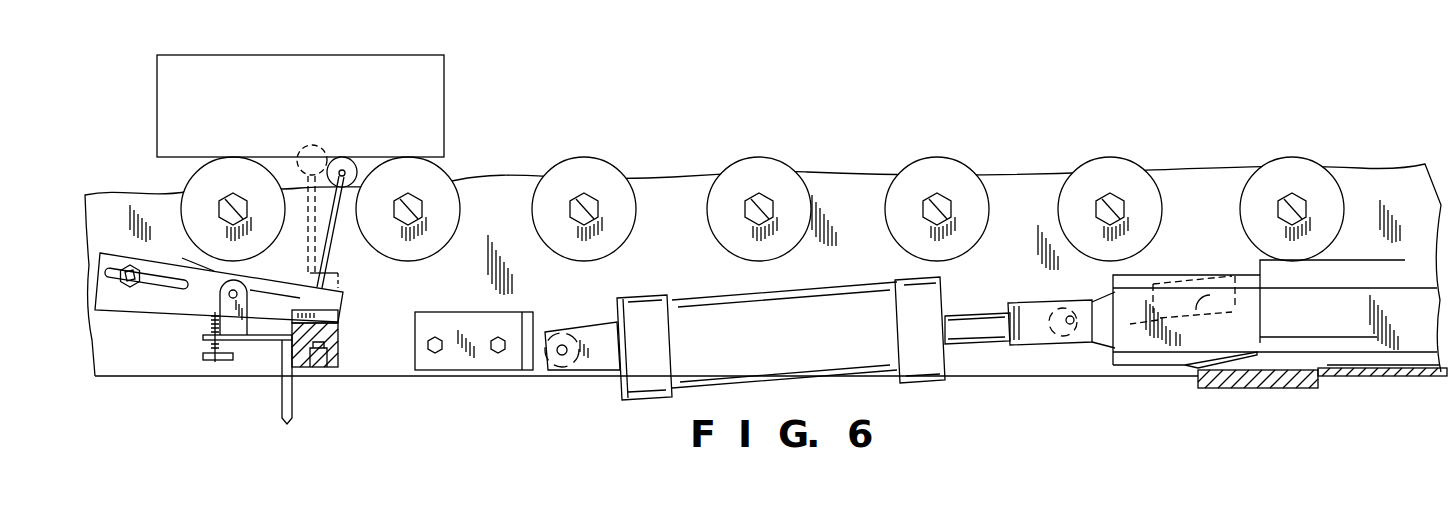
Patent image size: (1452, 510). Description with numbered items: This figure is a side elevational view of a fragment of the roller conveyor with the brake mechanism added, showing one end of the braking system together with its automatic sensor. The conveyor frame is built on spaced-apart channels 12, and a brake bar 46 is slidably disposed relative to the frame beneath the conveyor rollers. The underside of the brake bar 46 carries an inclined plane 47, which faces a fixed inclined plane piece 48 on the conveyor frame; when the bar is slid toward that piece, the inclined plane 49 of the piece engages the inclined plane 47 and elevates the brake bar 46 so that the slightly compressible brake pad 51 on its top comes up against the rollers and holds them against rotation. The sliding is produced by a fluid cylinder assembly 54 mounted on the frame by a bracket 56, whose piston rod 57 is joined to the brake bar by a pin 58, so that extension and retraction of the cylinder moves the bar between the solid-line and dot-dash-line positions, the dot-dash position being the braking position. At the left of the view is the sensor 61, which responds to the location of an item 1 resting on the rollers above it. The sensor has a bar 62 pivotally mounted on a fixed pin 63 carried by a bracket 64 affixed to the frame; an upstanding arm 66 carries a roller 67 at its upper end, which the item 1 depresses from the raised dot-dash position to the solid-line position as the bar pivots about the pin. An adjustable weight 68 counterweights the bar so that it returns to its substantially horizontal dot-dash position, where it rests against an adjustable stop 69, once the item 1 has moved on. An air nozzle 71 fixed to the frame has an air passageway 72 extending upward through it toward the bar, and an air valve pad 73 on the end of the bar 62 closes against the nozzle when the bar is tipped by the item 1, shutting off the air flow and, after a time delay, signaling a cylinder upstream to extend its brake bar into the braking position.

The item 1 is at (436, 112).
The channel 12 is at (678, 186).
The brake bar 46 is at (1135, 358).
The inclined plane 47 is at (1186, 366).
The fixed inclined plane piece 48 is at (1321, 368).
The inclined plane 49 is at (1231, 372).
The brake pad 51 is at (1167, 279).
The fluid cylinder assembly 54 is at (883, 372).
The bracket 56 is at (508, 361).
The piston rod 57 is at (977, 319).
The pin 58 is at (1068, 318).
The sensor 61 is at (356, 158).
The bar 62 is at (197, 292).
The fixed pin 63 is at (186, 253).
The bracket 64 is at (238, 318).
The upstanding arm 66 is at (331, 233).
The roller 67 is at (316, 146).
The adjustable weight 68 is at (130, 287).
The adjustable stop 69 is at (220, 362).
The air nozzle 71 is at (341, 345).
The air passageway 72 is at (312, 368).
The air valve pad 73 is at (343, 313).